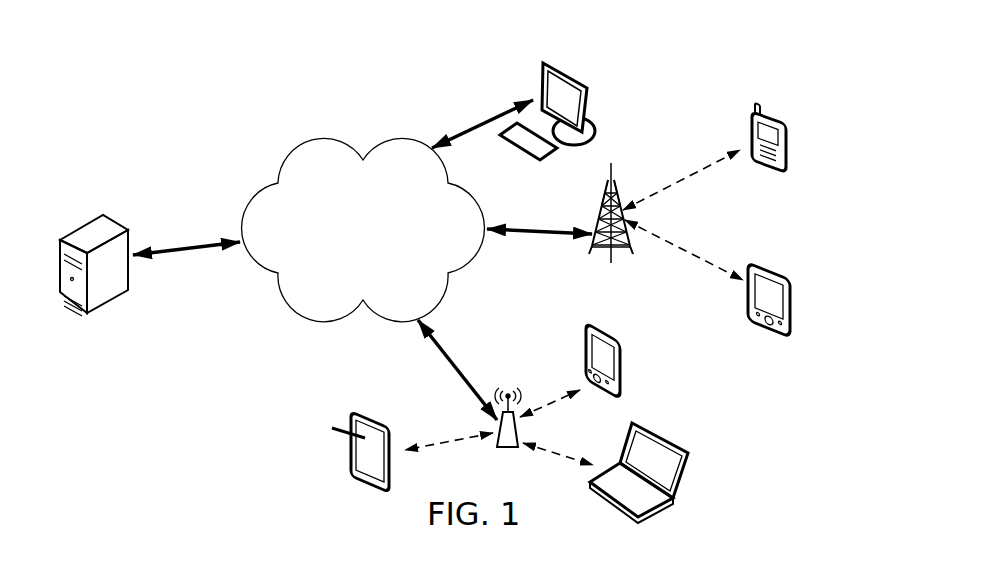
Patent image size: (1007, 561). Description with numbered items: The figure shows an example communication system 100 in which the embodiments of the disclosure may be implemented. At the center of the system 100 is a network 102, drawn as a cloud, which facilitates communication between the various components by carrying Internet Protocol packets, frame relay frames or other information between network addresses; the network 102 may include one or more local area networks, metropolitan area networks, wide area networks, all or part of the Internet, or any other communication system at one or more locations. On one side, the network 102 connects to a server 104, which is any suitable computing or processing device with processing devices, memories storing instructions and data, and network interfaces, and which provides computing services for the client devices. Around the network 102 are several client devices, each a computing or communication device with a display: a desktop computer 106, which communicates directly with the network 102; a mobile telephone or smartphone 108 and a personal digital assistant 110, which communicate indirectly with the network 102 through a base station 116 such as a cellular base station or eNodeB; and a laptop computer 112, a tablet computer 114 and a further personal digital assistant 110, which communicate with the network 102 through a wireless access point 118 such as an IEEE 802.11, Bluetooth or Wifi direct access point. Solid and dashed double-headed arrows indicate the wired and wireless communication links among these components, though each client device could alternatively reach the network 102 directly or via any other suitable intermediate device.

The communication system 100 is at (160, 68).
The network 102 is at (287, 148).
The server 104 is at (77, 230).
The desktop computer 106 is at (540, 77).
The mobile telephone or smartphone 108 is at (785, 120).
The personal digital assistant 110 is at (782, 272).
The laptop computer 112 is at (687, 460).
The tablet computer 114 is at (352, 413).
The base station 116 is at (632, 250).
The wireless access point 118 is at (520, 410).